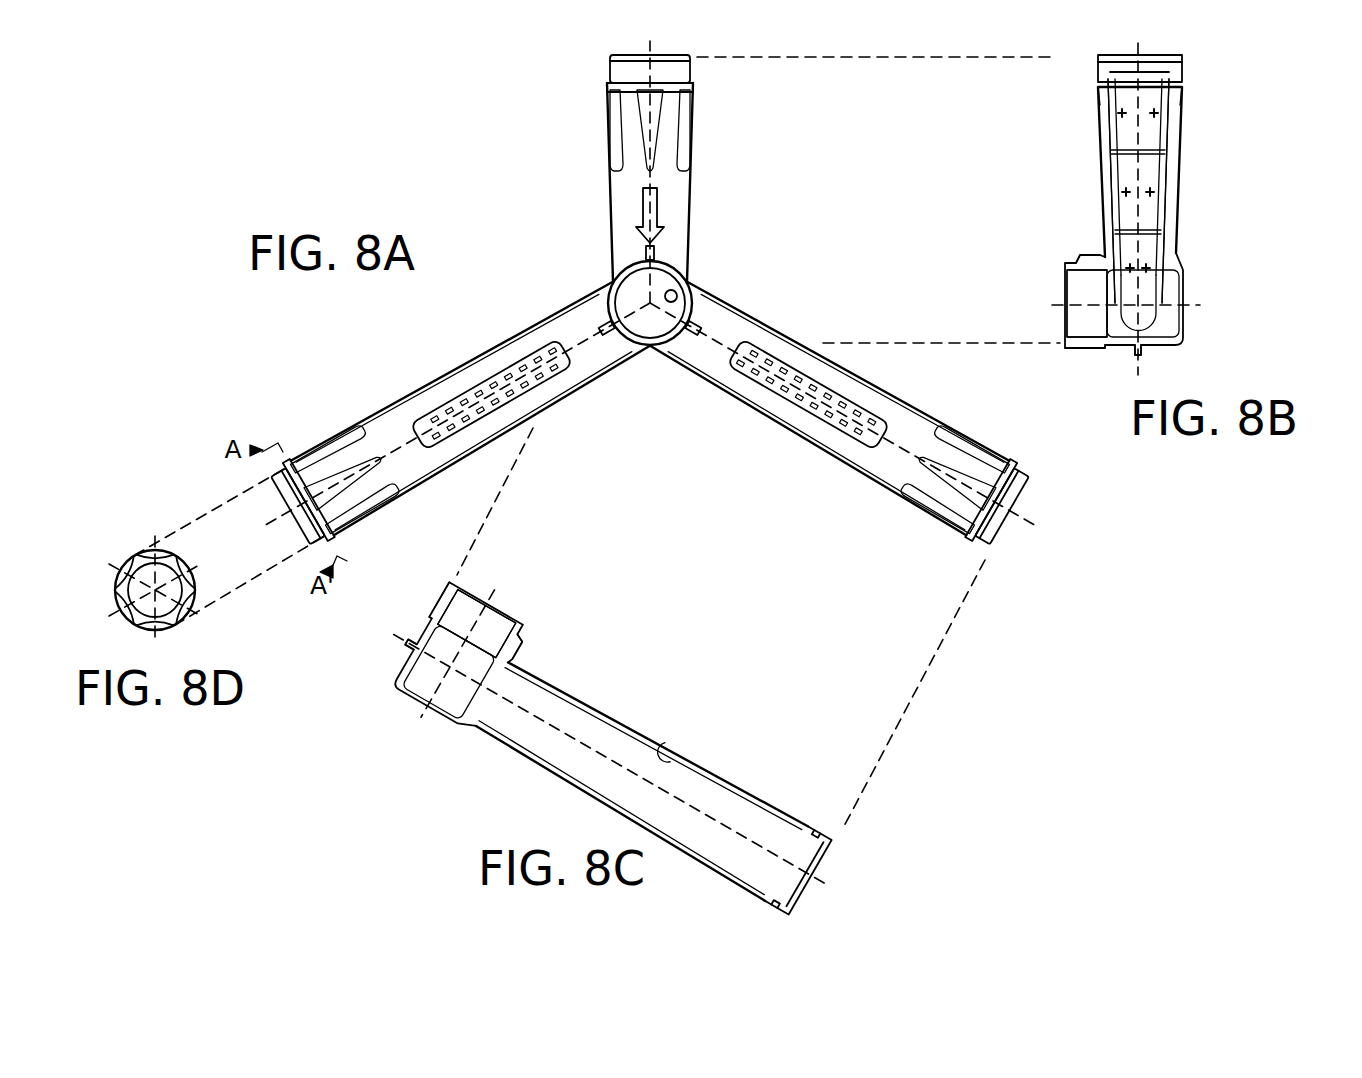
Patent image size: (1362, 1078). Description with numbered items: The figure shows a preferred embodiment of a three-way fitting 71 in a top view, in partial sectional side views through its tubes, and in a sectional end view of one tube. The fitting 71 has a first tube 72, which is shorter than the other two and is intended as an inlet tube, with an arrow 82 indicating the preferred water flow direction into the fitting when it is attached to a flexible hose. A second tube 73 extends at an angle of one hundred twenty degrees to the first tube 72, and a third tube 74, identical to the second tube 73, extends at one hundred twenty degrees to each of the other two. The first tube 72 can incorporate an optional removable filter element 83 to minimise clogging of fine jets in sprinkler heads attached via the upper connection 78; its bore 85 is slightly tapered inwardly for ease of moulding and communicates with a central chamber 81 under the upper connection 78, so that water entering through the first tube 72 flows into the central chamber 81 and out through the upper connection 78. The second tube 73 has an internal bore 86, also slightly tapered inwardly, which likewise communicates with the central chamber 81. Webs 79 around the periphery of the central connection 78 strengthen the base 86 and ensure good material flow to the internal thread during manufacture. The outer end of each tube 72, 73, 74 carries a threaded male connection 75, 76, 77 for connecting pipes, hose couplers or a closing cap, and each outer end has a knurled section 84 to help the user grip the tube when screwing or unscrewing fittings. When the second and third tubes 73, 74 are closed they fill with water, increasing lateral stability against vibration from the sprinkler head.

In FIG. 8A, the fitting 71 is at (482, 209).
In FIG. 8A, the first tube 72 is at (700, 190).
In FIG. 8B, the first tube 72 is at (1178, 190).
In FIG. 8A, the second tube 73 is at (898, 402).
In FIG. 8C, the second tube 73 is at (700, 766).
In FIG. 8A, the third tube 74 is at (505, 345).
In FIG. 8A, the threaded male connection 75 is at (695, 68).
In FIG. 8B, the threaded male connection 75 is at (1185, 70).
In FIG. 8A, the threaded male connection 76 is at (1020, 475).
In FIG. 8C, the threaded male connection 76 is at (830, 840).
In FIG. 8A, the threaded male connection 77 is at (282, 470).
In FIG. 8A, the upper connection 78 is at (680, 290).
In FIG. 8B, the upper connection 78 is at (1080, 333).
In FIG. 8C, the upper connection 78 is at (502, 627).
In FIG. 8A, the webs 79 is at (655, 252).
In FIG. 8B, the webs 79 is at (1085, 260).
In FIG. 8C, the webs 79 is at (520, 640).
In FIG. 8B, the central chamber 81 is at (1168, 320).
In FIG. 8C, the central chamber 81 is at (418, 690).
In FIG. 8A, the arrow 82 is at (656, 218).
In FIG. 8B, the filter element 83 is at (1163, 265).
In FIG. 8A, the knurled section 84 is at (615, 122).
In FIG. 8B, the knurled section 84 is at (1098, 120).
In FIG. 8C, the knurled section 84 is at (778, 810).
In FIG. 8D, the knurled section 84 is at (183, 565).
In FIG. 8B, the bore 85 is at (1108, 165).
In FIG. 8A, the internal bore 86 is at (677, 332).
In FIG. 8B, the internal bore 86 is at (1108, 350).
In FIG. 8C, the internal bore 86 is at (505, 657).